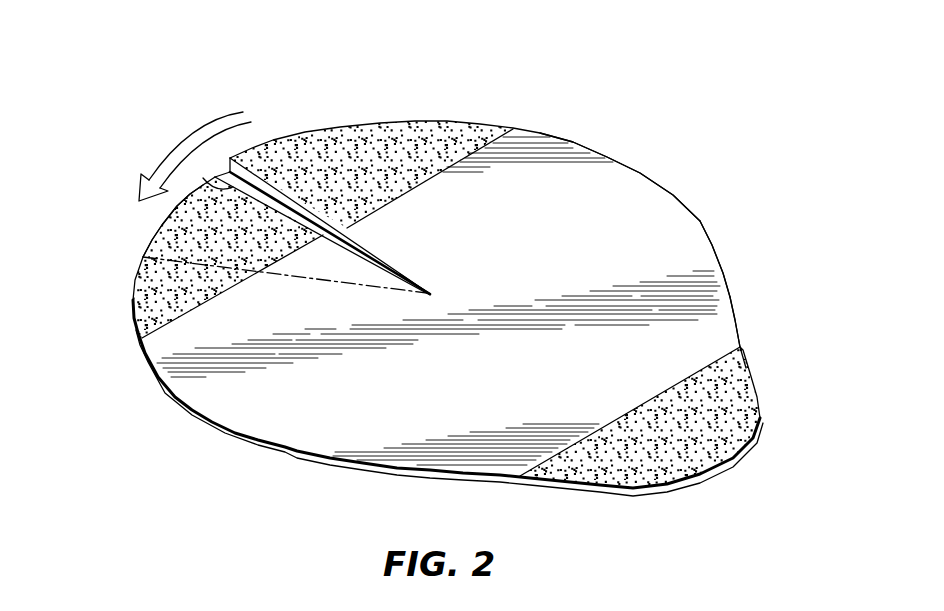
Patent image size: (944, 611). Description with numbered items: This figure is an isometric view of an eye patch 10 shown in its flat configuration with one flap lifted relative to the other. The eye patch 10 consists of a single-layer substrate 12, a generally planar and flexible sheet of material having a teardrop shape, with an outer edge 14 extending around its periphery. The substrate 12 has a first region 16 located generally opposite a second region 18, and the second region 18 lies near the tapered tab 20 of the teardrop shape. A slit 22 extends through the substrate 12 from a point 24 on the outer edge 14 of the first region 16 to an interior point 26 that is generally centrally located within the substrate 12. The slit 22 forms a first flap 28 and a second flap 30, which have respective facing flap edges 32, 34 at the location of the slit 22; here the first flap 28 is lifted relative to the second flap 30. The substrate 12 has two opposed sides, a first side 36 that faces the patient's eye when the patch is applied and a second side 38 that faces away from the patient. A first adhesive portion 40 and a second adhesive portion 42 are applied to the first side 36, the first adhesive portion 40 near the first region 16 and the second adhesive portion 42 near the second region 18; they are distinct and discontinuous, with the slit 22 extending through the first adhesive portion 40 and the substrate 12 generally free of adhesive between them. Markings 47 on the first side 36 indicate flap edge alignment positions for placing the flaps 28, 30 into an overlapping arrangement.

The eye patch 10 is at (446, 232).
The single-layer substrate 12 is at (641, 183).
The outer edge 14 is at (703, 226).
The first region 16 is at (134, 285).
The second region 18 is at (748, 312).
The tapered tab 20 is at (733, 463).
The slit 22 is at (284, 193).
The point 24 is at (228, 161).
The interior point 26 is at (430, 292).
The first flap 28 is at (340, 140).
The second flap 30 is at (141, 293).
The flap edge 32 is at (263, 150).
The flap edge 34 is at (213, 176).
The first side 36 is at (568, 276).
The second side 38 is at (346, 473).
The first adhesive portion 40 is at (168, 247).
The second adhesive portion 42 is at (724, 416).
The markings 47 is at (298, 280).